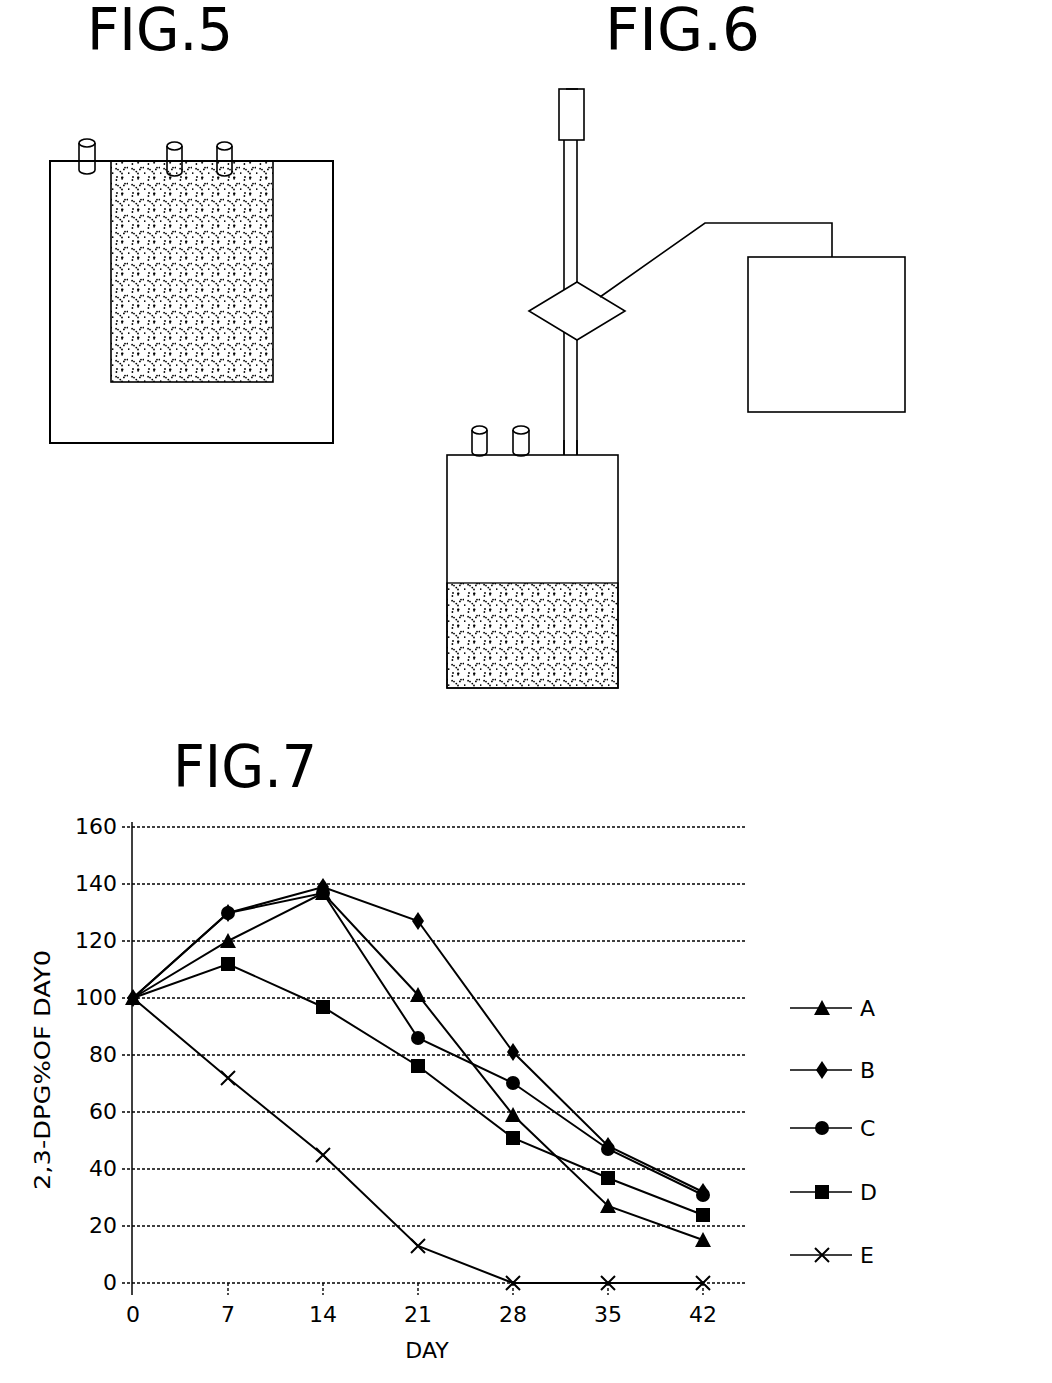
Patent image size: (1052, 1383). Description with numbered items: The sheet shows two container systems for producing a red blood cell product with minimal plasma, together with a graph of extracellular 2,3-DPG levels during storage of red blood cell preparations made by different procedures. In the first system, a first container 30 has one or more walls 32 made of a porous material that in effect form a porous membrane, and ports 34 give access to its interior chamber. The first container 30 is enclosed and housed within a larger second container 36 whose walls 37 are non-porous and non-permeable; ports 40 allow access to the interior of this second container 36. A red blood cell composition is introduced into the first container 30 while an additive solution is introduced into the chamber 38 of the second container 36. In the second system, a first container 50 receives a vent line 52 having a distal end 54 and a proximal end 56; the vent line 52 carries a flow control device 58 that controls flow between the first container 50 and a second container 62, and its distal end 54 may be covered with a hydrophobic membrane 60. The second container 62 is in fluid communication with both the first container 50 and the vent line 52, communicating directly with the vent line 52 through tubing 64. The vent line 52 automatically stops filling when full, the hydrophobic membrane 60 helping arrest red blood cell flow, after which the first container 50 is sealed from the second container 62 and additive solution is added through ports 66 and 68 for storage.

In FIG. 5, the first container 30 is at (266, 310).
In FIG. 5, the walls 32 is at (168, 327).
In FIG. 5, the ports 34 is at (178, 160).
In FIG. 5, the second container 36 is at (303, 415).
In FIG. 5, the walls 37 is at (112, 423).
In FIG. 5, the chamber 38 is at (302, 363).
In FIG. 5, the ports 40 is at (96, 150).
In FIG. 6, the first container 50 is at (613, 550).
In FIG. 6, the vent line 52 is at (573, 180).
In FIG. 6, the distal end 54 is at (577, 89).
In FIG. 6, the proximal end 56 is at (581, 455).
In FIG. 6, the flow control device 58 is at (587, 322).
In FIG. 6, the hydrophobic membrane 60 is at (574, 107).
In FIG. 6, the second container 62 is at (772, 352).
In FIG. 6, the tubing 64 is at (752, 223).
In FIG. 6, the port 66 is at (479, 425).
In FIG. 6, the port 68 is at (521, 425).